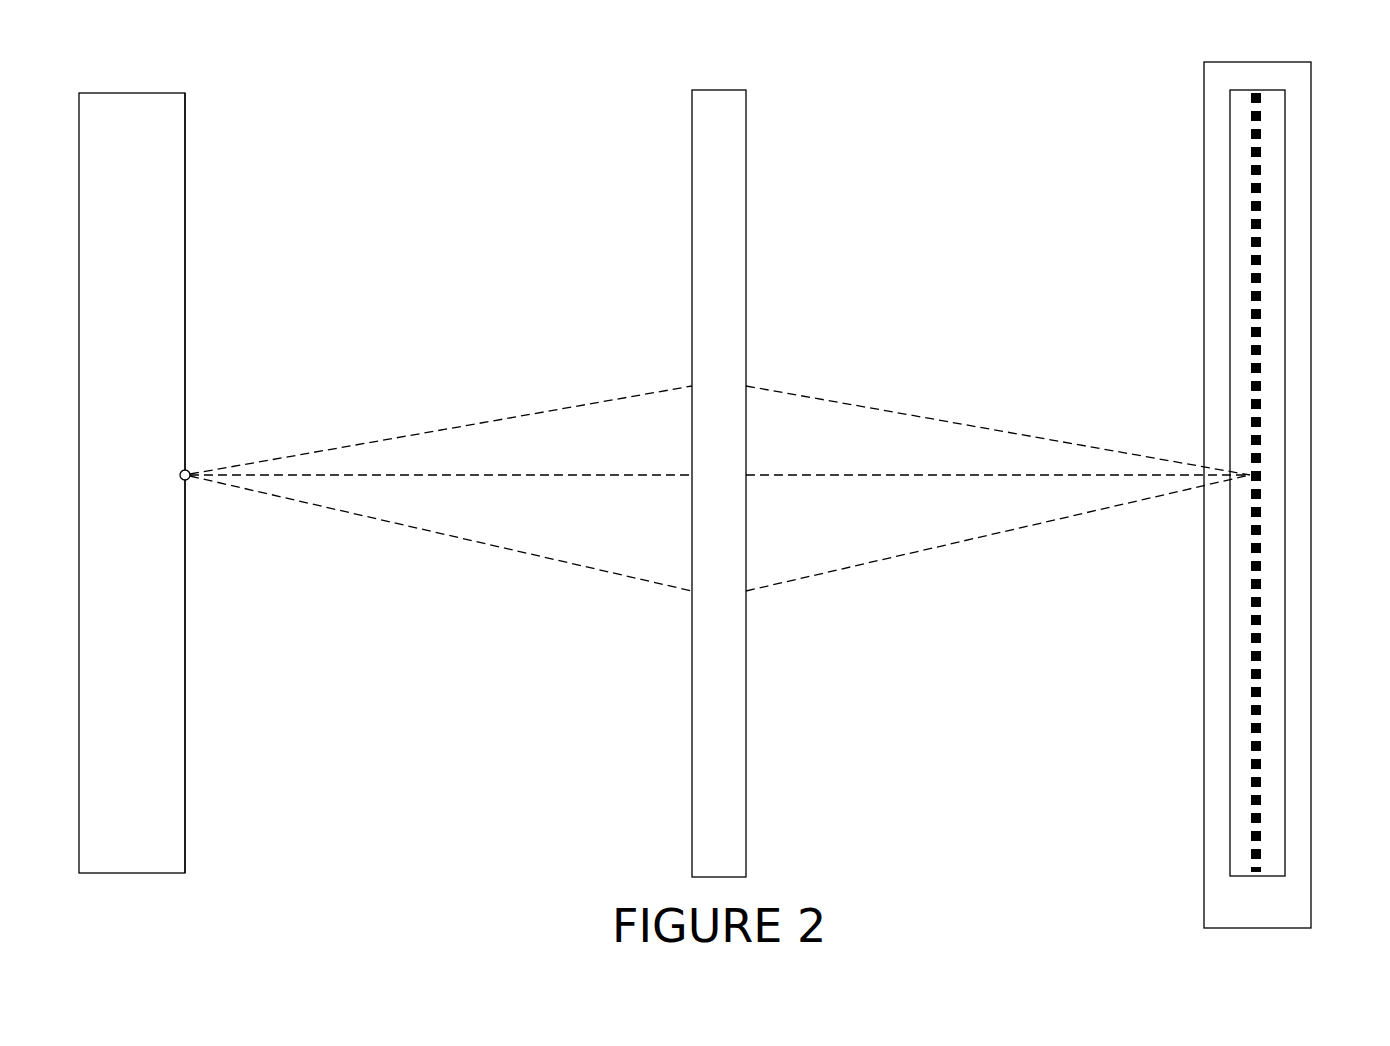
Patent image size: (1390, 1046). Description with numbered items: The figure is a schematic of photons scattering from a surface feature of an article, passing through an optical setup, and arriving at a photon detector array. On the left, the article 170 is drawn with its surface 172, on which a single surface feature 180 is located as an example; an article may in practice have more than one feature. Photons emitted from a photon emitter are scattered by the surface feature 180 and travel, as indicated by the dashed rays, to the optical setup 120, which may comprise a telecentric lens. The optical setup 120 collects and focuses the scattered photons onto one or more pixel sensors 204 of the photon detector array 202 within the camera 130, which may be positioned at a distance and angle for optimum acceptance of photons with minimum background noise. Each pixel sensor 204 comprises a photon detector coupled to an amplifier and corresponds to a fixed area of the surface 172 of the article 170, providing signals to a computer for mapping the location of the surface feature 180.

The optical setup 120 is at (716, 748).
The camera 130 is at (1284, 918).
The article 170 is at (164, 853).
The surface 172 is at (185, 274).
The surface feature 180 is at (180, 472).
The photon detector array 202 is at (1285, 683).
The pixel sensors 204 is at (1260, 277).